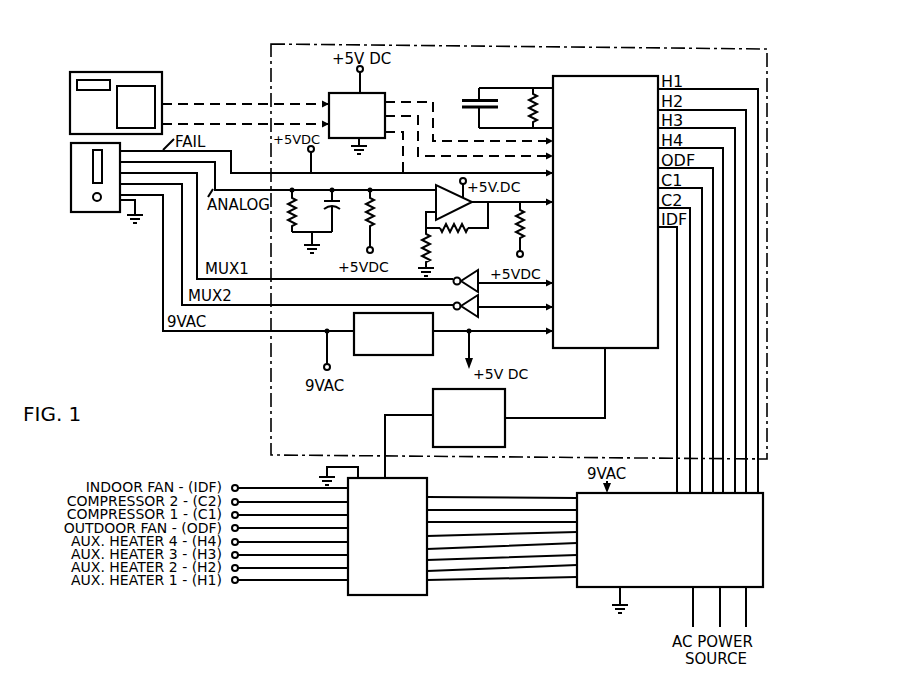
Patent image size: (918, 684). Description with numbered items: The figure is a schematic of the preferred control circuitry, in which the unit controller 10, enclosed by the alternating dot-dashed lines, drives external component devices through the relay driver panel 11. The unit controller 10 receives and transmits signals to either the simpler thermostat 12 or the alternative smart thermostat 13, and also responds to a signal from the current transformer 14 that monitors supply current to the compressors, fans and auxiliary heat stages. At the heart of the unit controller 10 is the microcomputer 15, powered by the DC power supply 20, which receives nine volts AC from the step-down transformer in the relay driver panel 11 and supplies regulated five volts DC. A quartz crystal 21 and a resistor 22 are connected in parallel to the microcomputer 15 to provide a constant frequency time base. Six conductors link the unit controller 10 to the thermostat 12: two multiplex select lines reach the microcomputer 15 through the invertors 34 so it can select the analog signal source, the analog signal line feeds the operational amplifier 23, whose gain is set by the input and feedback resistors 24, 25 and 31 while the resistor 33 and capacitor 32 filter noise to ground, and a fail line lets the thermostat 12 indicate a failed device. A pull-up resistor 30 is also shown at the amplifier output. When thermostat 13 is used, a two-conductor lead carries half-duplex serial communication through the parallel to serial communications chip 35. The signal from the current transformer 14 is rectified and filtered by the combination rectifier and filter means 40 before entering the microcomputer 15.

The unit controller 10 is at (457, 46).
The relay driver panel 11 is at (673, 550).
The thermostat 12 is at (82, 212).
The thermostat 13 is at (134, 72).
The current transformer 14 is at (397, 550).
The microcomputer 15 is at (618, 221).
The DC power supply 20 is at (403, 343).
The quartz crystal 21 is at (466, 102).
The resistor 22 is at (518, 108).
The operational amplifier 23 is at (434, 203).
The input and feedback resistor 24 is at (459, 242).
The input and feedback resistor 25 is at (435, 252).
The pull-up resistor 30 is at (531, 229).
The input and feedback resistor 31 is at (383, 221).
The capacitor 32 is at (341, 210).
The resistor 33 is at (291, 228).
The invertors 34 is at (481, 293).
The parallel to serial communications chip 35 is at (367, 127).
The combination rectifier and filter means 40 is at (479, 428).